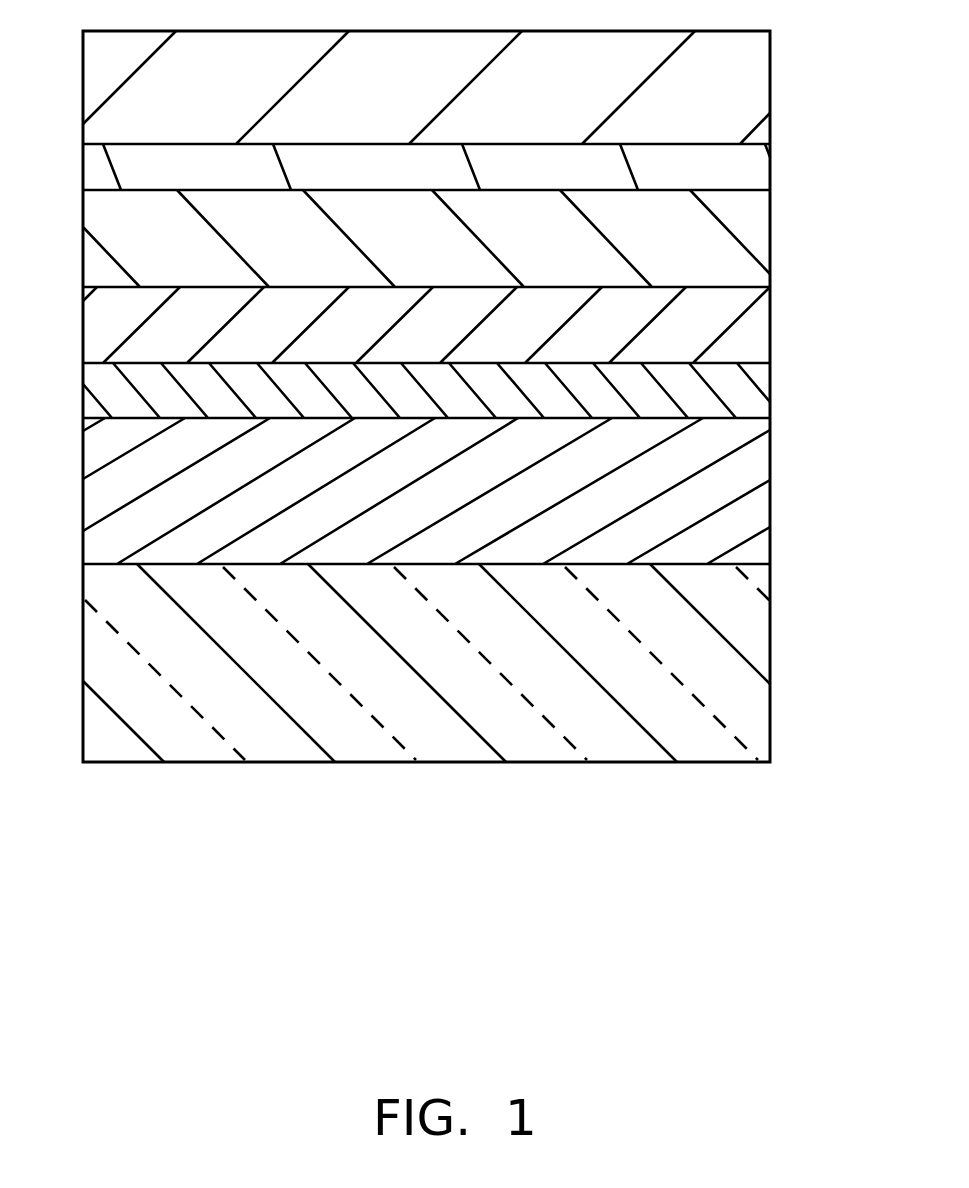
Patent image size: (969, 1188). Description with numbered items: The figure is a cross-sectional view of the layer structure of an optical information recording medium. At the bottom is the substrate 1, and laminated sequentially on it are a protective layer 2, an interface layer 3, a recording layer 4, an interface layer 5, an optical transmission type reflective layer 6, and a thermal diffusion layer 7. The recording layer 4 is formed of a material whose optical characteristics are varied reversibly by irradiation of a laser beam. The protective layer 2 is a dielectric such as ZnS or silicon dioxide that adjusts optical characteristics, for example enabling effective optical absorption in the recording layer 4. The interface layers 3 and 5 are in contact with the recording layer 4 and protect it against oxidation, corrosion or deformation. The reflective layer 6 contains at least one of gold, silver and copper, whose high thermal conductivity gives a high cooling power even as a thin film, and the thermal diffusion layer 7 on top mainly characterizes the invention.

The substrate 1 is at (707, 653).
The protective layer 2 is at (700, 498).
The interface layer 3 is at (712, 388).
The recording layer 4 is at (707, 327).
The interface layer 5 is at (707, 240).
The optical transmission type reflective layer 6 is at (718, 167).
The thermal diffusion layer 7 is at (725, 103).